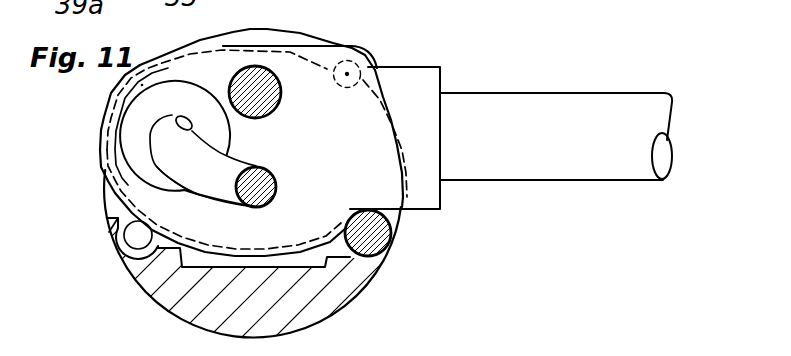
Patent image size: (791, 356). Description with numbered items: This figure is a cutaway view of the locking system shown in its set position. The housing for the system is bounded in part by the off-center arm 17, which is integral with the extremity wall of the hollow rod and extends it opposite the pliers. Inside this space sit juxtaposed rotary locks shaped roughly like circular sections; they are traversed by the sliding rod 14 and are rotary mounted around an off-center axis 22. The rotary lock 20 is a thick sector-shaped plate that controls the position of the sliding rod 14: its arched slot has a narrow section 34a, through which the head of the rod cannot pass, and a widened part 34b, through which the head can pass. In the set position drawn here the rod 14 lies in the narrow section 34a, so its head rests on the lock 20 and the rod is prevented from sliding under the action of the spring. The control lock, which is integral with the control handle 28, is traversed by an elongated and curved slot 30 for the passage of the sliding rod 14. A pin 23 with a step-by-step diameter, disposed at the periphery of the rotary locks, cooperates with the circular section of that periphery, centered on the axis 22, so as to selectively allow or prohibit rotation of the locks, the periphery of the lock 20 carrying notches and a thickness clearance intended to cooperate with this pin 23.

The sliding rod 14 is at (277, 175).
The arm 17 is at (305, 302).
The rotary lock 20 is at (357, 180).
The axis 22 is at (262, 68).
The pin 23 is at (385, 248).
The control handle 28 is at (540, 107).
The elongated and curved slot 30 is at (178, 142).
The narrow section 34a is at (223, 182).
The widened part 34b is at (142, 113).